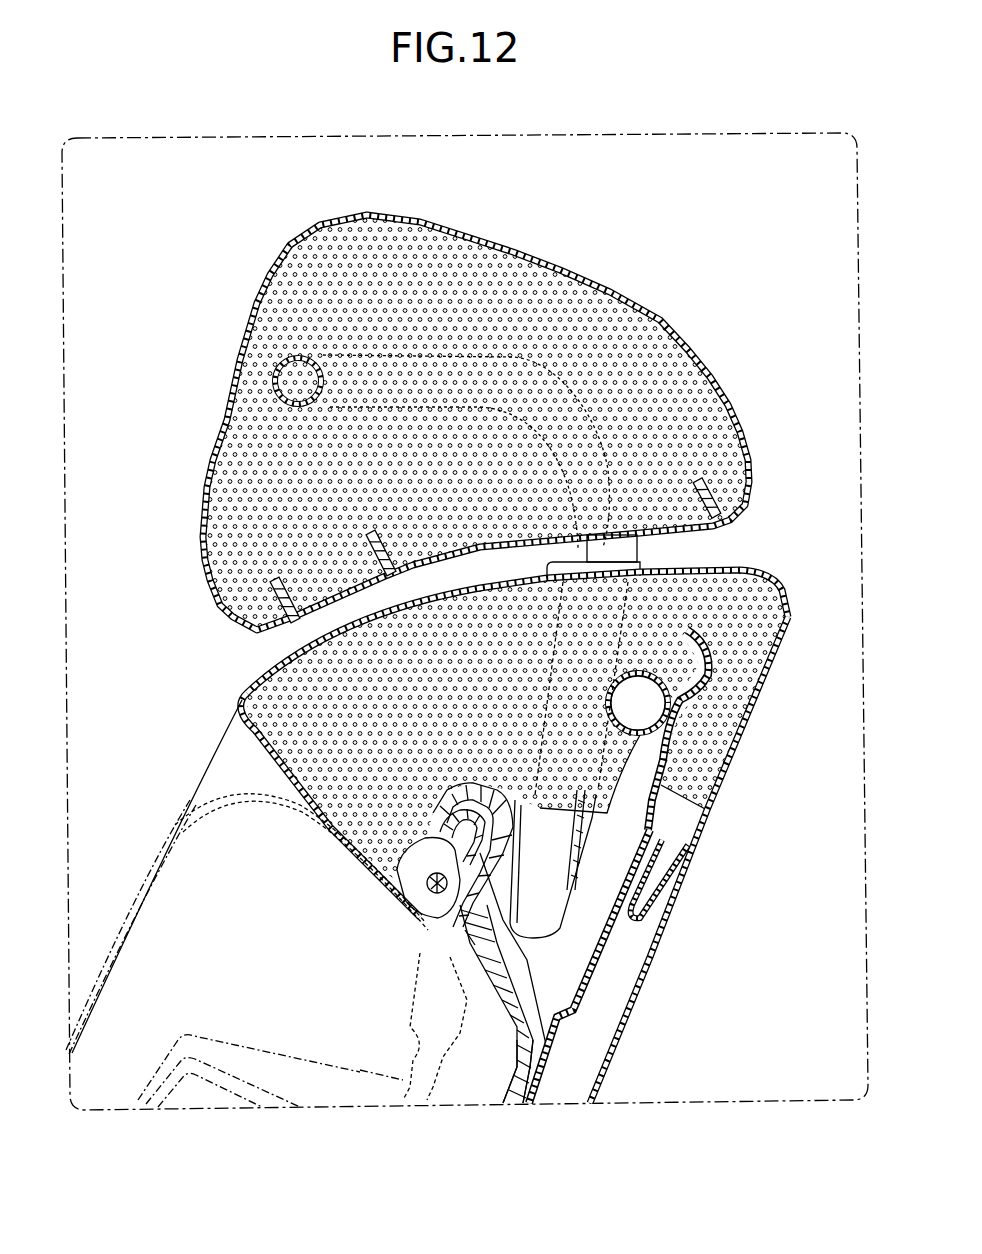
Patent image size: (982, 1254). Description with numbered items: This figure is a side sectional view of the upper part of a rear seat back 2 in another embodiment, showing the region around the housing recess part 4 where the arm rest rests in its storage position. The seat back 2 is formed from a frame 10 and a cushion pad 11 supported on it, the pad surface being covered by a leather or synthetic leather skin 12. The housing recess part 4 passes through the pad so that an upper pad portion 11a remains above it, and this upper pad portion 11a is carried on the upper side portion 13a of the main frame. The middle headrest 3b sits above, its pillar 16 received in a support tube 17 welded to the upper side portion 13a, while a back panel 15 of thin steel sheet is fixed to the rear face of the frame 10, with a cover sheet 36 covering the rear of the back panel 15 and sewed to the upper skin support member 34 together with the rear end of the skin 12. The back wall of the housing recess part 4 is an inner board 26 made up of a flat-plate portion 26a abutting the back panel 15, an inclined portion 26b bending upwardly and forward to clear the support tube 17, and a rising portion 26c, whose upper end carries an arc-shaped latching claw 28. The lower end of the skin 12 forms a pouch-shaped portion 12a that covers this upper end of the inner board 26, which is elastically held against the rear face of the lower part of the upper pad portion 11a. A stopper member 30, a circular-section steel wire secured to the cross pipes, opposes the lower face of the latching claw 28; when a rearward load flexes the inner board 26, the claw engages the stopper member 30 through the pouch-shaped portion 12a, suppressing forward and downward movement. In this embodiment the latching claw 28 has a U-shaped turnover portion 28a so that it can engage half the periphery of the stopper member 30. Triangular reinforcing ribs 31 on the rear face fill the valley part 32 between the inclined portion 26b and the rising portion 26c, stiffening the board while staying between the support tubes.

The headrest 3b is at (640, 340).
The pillar 16 is at (620, 542).
The seat back 2 is at (764, 574).
The cushion pad 11 is at (766, 604).
The frame 10 is at (676, 671).
The skin 12 is at (258, 688).
The housing recess part 4 is at (250, 828).
The upper pad portion 11a is at (445, 704).
The latching claw 28 is at (462, 782).
The U-shaped turnover portion 28a is at (445, 818).
The upper side portion 13a is at (668, 765).
The pouch-shaped portion 12a is at (510, 813).
The support tube 17 is at (590, 834).
The rising portion 26c is at (490, 870).
The stopper member 30 is at (440, 895).
The reinforcing rib 31 is at (540, 923).
The upper skin support member 34 is at (650, 912).
The valley part 32 is at (470, 937).
The back panel 15 is at (600, 947).
The inclined portion 26b is at (503, 990).
The flat-plate portion 26a is at (513, 1087).
The cover sheet 36 is at (620, 1025).
The inner board 26 is at (508, 1109).